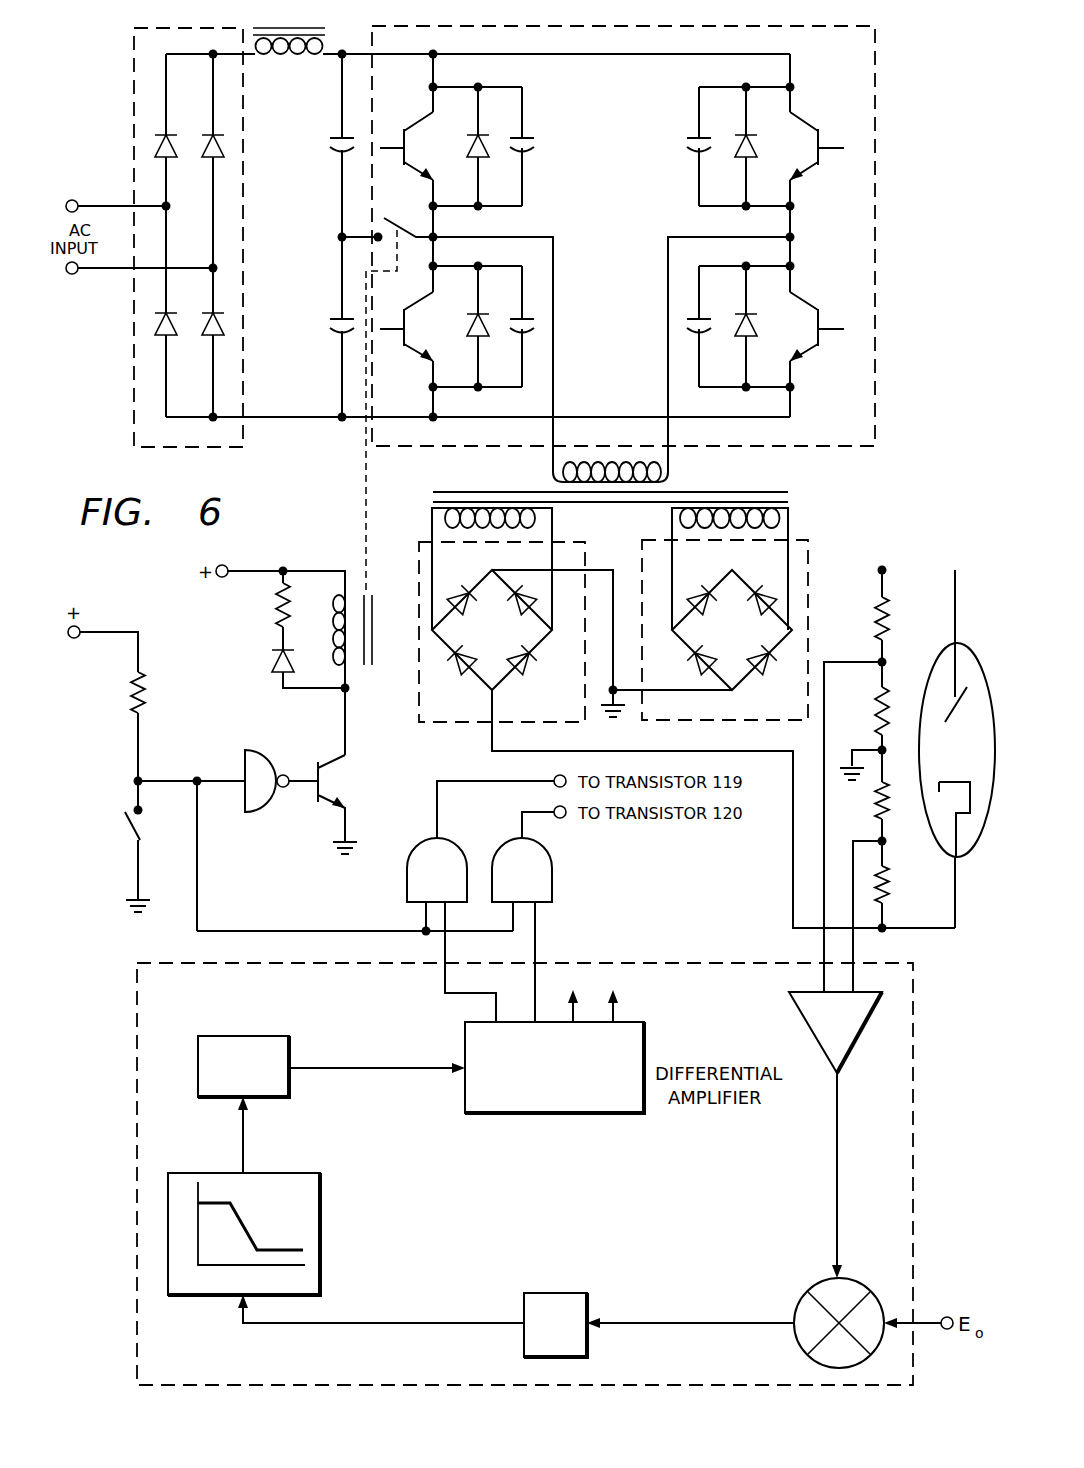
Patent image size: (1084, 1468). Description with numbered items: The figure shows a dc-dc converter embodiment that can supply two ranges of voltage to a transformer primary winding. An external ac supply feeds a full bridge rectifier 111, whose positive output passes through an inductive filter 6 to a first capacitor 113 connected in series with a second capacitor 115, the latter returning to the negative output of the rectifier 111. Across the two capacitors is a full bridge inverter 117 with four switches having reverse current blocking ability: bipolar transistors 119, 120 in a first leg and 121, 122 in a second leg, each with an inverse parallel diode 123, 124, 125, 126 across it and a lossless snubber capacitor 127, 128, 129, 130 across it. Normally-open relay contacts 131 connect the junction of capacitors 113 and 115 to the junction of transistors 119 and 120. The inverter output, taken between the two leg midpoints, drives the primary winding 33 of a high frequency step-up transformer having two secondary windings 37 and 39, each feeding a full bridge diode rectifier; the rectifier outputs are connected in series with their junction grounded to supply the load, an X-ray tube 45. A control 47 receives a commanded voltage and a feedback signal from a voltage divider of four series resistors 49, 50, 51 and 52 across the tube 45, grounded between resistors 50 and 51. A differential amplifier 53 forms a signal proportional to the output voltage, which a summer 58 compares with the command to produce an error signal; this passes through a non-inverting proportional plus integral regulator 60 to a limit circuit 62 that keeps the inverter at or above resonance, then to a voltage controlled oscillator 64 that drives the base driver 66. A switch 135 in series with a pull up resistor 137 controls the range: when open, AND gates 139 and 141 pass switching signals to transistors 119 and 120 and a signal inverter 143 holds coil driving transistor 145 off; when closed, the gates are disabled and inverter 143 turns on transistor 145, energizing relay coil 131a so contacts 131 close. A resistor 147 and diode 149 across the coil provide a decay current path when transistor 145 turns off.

The full bridge rectifier 111 is at (134, 133).
The inductive filter 6 is at (290, 68).
The first capacitor 113 is at (330, 153).
The second capacitor 115 is at (337, 315).
The full bridge inverter 117 is at (878, 390).
The bipolar transistor 119 is at (412, 122).
The bipolar transistor 120 is at (412, 352).
The bipolar transistor 121 is at (812, 118).
The bipolar transistor 122 is at (808, 297).
The inverse parallel diode 123 is at (478, 138).
The inverse parallel diode 124 is at (478, 338).
The inverse parallel diode 125 is at (742, 135).
The inverse parallel diode 126 is at (742, 338).
The snubber capacitor 127 is at (526, 135).
The snubber capacitor 128 is at (528, 322).
The snubber capacitor 129 is at (690, 142).
The snubber capacitor 130 is at (690, 328).
The relay contacts 131 is at (406, 214).
The relay coil 131a is at (367, 658).
The primary winding 33 is at (670, 478).
The secondary winding 37 is at (432, 510).
The secondary winding 39 is at (790, 510).
The X-ray tube 45 is at (940, 660).
The control 47 is at (680, 962).
The resistor 49 is at (888, 602).
The resistor 50 is at (876, 716).
The resistor 51 is at (876, 792).
The resistor 52 is at (890, 882).
The differential amplifier 53 is at (800, 1012).
The summer 58 is at (805, 1300).
The proportional plus integral regulator 60 is at (557, 1292).
The limit circuit 62 is at (320, 1250).
The voltage controlled oscillator 64 is at (290, 1042).
The base driver 66 is at (645, 1037).
The switch 135 is at (126, 838).
The pull up resistor 137 is at (148, 683).
The AND gate 139 is at (407, 870).
The AND gate 141 is at (555, 868).
The signal inverter 143 is at (255, 748).
The coil driving transistor 145 is at (345, 790).
The resistor 147 is at (281, 600).
The diode 149 is at (274, 667).